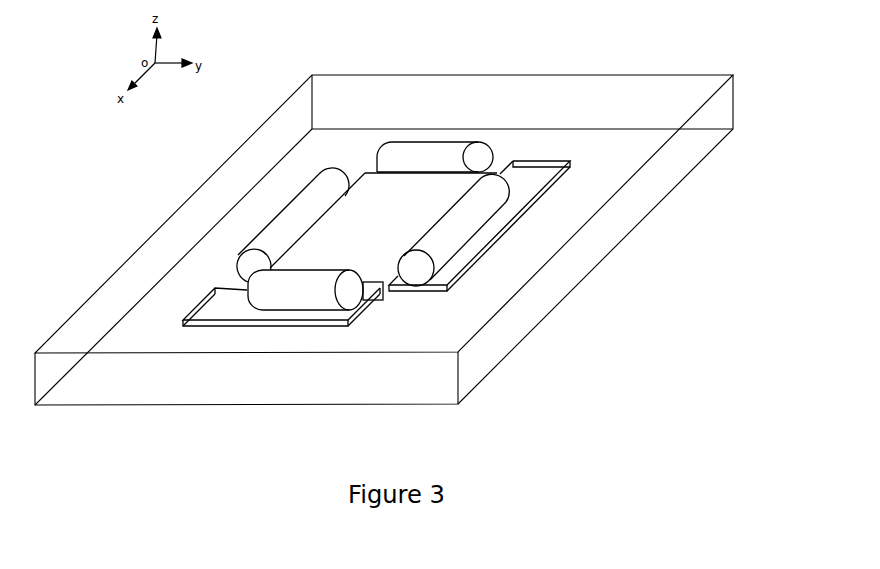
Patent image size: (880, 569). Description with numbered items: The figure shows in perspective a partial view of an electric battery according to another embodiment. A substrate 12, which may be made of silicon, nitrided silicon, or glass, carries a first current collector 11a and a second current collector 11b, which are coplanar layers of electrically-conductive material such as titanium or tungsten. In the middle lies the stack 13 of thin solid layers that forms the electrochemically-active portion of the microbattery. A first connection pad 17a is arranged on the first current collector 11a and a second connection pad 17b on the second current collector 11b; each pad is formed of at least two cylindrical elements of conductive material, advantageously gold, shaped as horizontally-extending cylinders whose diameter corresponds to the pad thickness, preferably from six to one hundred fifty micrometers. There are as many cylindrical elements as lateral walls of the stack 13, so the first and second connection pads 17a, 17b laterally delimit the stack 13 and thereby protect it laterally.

The substrate 12 is at (692, 143).
The stack 13 is at (370, 258).
The first current collector 11a is at (233, 290).
The second current collector 11b is at (507, 160).
The first connection pad 17a is at (308, 203).
The second connection pad 17b is at (417, 152).